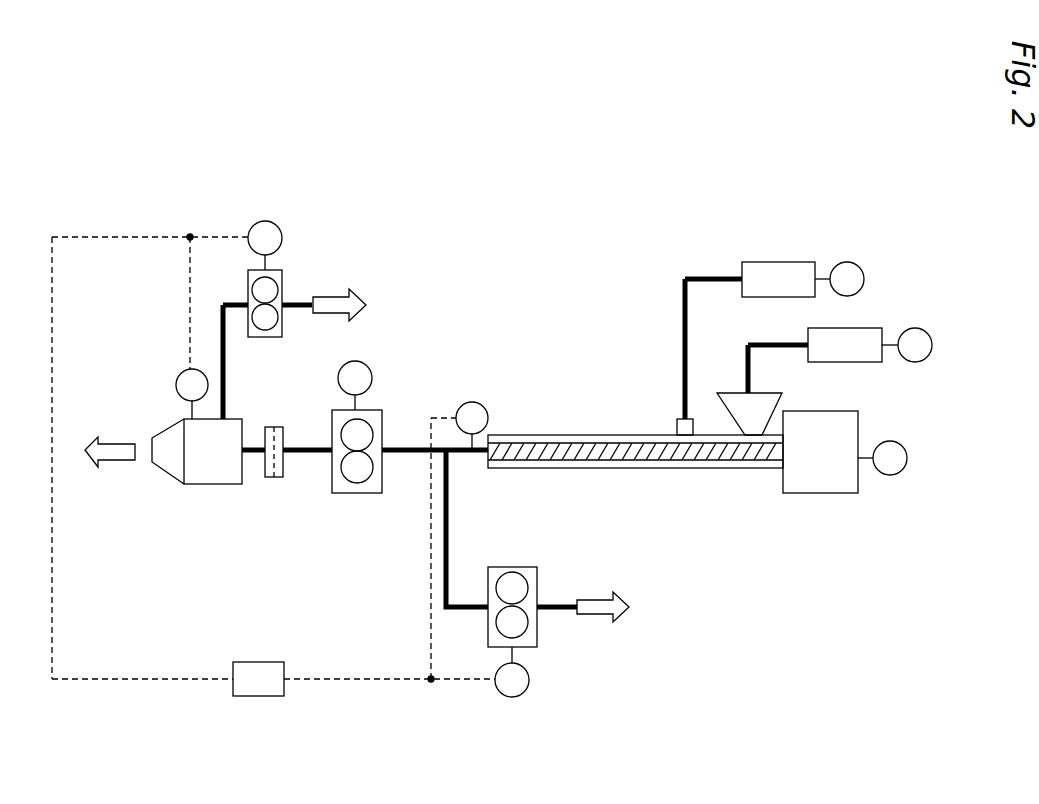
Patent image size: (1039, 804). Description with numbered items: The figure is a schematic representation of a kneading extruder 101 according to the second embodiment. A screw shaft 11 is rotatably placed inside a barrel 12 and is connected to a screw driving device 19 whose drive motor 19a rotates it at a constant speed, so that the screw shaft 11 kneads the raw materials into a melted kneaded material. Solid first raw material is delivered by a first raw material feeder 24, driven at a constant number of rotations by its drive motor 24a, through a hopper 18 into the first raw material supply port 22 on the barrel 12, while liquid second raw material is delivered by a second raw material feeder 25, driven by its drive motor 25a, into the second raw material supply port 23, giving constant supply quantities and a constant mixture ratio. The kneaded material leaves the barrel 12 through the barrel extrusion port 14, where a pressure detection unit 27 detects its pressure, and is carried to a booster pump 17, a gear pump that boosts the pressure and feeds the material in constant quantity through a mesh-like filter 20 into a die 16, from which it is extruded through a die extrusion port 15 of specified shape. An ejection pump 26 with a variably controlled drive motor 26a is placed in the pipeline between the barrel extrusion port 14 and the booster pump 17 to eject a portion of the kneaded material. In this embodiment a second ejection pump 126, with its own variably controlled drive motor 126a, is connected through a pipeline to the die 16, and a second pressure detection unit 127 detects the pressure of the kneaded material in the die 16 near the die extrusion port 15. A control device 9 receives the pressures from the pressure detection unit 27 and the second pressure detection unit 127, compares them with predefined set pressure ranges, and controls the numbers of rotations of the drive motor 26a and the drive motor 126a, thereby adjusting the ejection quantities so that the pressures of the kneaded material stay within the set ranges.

The control device 9 is at (273, 465).
The screw shaft 11 is at (600, 470).
The barrel 12 is at (535, 470).
The barrel extrusion port 14 is at (485, 470).
The die extrusion port 15 is at (148, 455).
The die 16 is at (210, 485).
The booster pump 17 is at (356, 494).
The hopper 18 is at (722, 390).
The screw driving device 19 is at (820, 494).
The drive motor 19a is at (888, 441).
The mesh-like filter 20 is at (275, 426).
The first raw material supply port 22 is at (750, 457).
The second raw material supply port 23 is at (688, 470).
The first raw material feeder 24 is at (860, 328).
The drive motor 24a is at (920, 328).
The second raw material feeder 25 is at (780, 262).
The drive motor 25a is at (848, 262).
The ejection pump 26 is at (537, 635).
The drive motor 26a is at (529, 680).
The pressure detection unit 27 is at (472, 402).
The kneading extruder 101 is at (888, 212).
The second ejection pump 126 is at (284, 295).
The drive motor 126a is at (283, 236).
The second pressure detection unit 127 is at (176, 384).